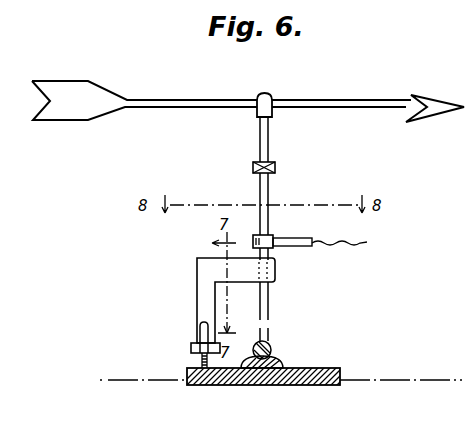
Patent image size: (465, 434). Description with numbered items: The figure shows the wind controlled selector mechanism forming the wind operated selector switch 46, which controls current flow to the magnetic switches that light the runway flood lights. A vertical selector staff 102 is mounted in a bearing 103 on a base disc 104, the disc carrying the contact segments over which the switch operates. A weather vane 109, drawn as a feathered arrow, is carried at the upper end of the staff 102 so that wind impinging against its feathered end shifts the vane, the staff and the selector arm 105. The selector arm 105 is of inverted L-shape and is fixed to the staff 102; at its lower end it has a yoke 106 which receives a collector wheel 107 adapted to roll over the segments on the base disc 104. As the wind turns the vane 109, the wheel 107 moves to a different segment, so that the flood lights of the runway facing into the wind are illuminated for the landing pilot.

The weather vane 109 is at (322, 100).
The wind operated selector switch 46 is at (278, 141).
The selector staff 102 is at (267, 192).
The selector arm 105 is at (202, 287).
The yoke 106 is at (198, 332).
The collector wheel 107 is at (200, 354).
The bearing 103 is at (269, 353).
The base disc 104 is at (263, 386).